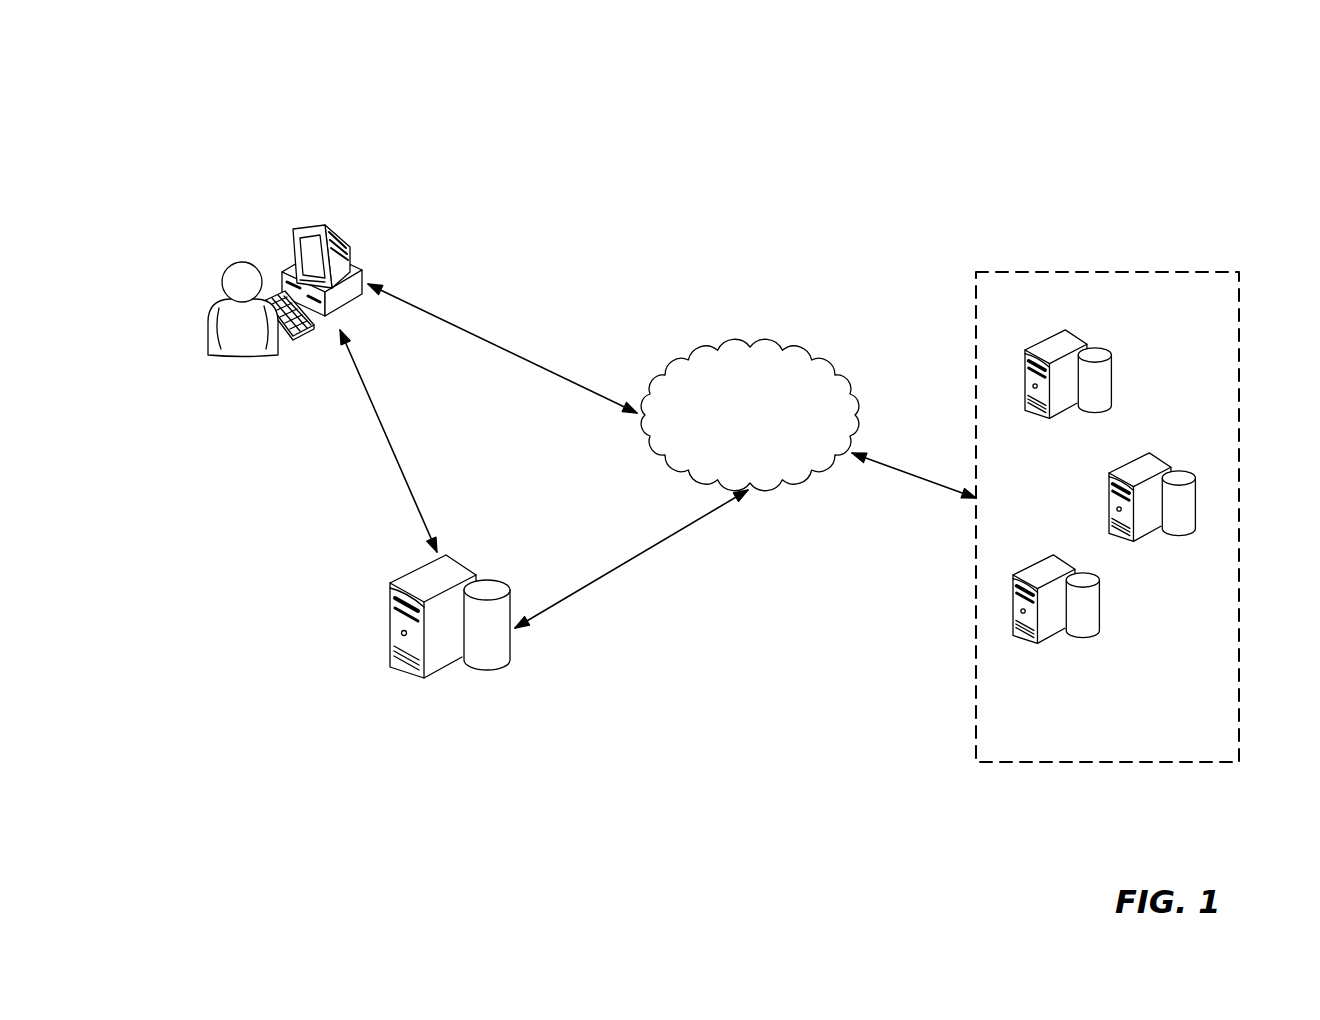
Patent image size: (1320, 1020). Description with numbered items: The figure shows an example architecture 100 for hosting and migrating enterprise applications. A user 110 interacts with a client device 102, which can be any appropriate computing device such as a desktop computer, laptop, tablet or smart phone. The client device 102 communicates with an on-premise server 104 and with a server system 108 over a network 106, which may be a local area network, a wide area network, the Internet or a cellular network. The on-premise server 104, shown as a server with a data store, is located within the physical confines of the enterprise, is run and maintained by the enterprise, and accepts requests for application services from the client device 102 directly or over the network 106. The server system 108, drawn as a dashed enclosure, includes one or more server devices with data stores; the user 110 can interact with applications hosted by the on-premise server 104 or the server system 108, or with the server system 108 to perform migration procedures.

The example architecture 100 is at (597, 99).
The client device 102 is at (287, 227).
The on-premise server 104 is at (456, 678).
The network 106 is at (752, 342).
The server system 108 is at (1106, 272).
The user 110 is at (228, 356).